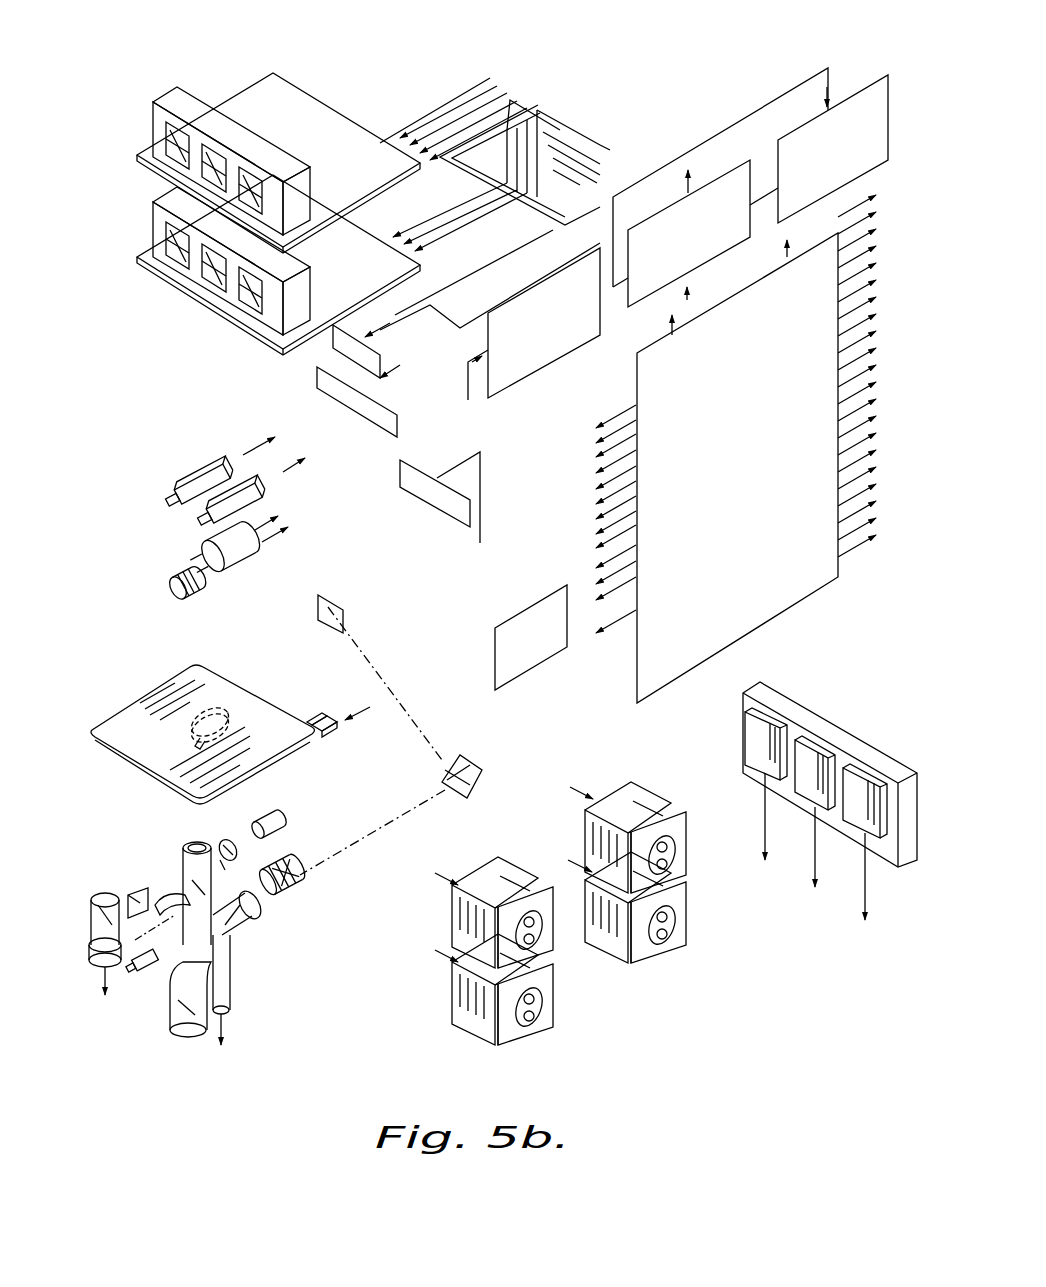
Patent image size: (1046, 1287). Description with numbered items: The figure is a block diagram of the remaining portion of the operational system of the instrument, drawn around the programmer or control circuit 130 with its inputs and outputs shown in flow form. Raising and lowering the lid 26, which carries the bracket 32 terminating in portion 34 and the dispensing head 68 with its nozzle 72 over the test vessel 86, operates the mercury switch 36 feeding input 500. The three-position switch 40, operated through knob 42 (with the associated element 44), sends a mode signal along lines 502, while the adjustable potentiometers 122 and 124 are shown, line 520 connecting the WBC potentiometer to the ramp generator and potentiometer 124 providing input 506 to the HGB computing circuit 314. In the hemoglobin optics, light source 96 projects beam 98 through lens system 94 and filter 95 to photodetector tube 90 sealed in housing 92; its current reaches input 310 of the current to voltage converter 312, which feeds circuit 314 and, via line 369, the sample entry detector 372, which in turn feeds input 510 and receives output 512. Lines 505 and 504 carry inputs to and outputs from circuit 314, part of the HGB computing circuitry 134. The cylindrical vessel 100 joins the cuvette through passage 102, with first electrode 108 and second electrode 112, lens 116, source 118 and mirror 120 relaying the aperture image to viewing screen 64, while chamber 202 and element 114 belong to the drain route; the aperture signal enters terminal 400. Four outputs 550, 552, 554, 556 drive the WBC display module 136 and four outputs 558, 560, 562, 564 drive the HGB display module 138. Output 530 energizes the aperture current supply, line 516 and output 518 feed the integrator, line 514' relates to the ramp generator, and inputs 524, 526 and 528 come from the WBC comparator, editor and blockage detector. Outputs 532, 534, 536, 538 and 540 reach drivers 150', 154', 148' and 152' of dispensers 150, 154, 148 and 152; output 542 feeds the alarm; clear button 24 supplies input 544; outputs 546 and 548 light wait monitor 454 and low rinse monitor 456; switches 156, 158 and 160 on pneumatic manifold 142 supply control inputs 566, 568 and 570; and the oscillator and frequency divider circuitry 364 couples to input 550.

The display module 136 is at (187, 102).
The display module 138 is at (230, 287).
The output 550 is at (470, 100).
The output 552 is at (505, 95).
The output 554 is at (515, 100).
The output 556 is at (528, 104).
The output 546 is at (598, 158).
The output 548 is at (600, 160).
The output 558 is at (425, 236).
The output 560 is at (440, 230).
The output 562 is at (425, 248).
The output 564 is at (478, 214).
The current to voltage converter 312 is at (500, 380).
The input 310 is at (468, 380).
The push button operated switch 24 is at (398, 473).
The input 544 is at (478, 532).
The wait signal monitor 454 is at (327, 340).
The low rinse liquid monitor 456 is at (320, 373).
The line 369 is at (742, 120).
The HGB computing circuit 134 is at (722, 67).
The sample entry detector circuit 372 is at (880, 77).
The HGB computing circuit 314 is at (710, 247).
The input 506 is at (712, 170).
The input 510 is at (785, 258).
The line 504 is at (670, 322).
The line 505 is at (688, 310).
The control circuit 130 is at (753, 612).
The output 512 is at (847, 195).
The output 542 is at (870, 212).
The output 540 is at (870, 229).
The output 538 is at (845, 265).
The output 534 is at (870, 266).
The output 536 is at (845, 298).
The output 532 is at (870, 300).
The output 518 is at (845, 333).
The line 516 is at (870, 334).
The output 530 is at (845, 366).
The conductor 514' is at (882, 363).
The lines 502 is at (640, 422).
The control input 566 is at (640, 452).
The input 500 is at (598, 472).
The control input 568 is at (600, 502).
The control input 570 is at (647, 508).
The input 528 is at (605, 530).
The input 526 is at (647, 540).
The input 524 is at (625, 565).
The oscillator and frequency divider circuitry 364 is at (540, 672).
The pneumatic manifold 142 is at (778, 695).
The switch 156 is at (752, 745).
The switch 158 is at (800, 785).
The switch 160 is at (853, 815).
The dispenser 150 is at (500, 893).
The driver 150' is at (420, 869).
The dispenser 148 is at (480, 995).
The fill dispenser driver 148' is at (417, 949).
The dispenser 152 is at (636, 816).
The driver 152' is at (572, 767).
The dispenser 154 is at (635, 926).
The driver 154' is at (559, 845).
The mirror 120 is at (480, 790).
The lid 26 is at (110, 722).
The nozzle 72 is at (228, 735).
The dispensing head 68 is at (235, 710).
The bracket 32 is at (310, 722).
The portion 34 is at (327, 718).
The mercury switch 36 is at (330, 733).
The viewing screen 64 is at (330, 600).
The motor 44 is at (215, 570).
The knob 42 is at (178, 590).
The three-position switch 40 is at (165, 555).
The adjustable potentiometer 122 is at (200, 477).
The adjustable potentiometer 124 is at (258, 496).
The line 520 is at (243, 455).
The test vessel 86 is at (183, 870).
The chamber 202 is at (213, 1035).
The cylindrical vessel 100 is at (228, 928).
The second electrode 112 is at (231, 968).
The outlet 114 is at (232, 1005).
The input terminal 400 is at (250, 985).
The lens 116 is at (305, 882).
The lens system 94 is at (228, 840).
The light source 96 is at (280, 822).
The photodetector tube 90 is at (92, 925).
The cylindrical housing 92 is at (92, 955).
The filter 95 is at (125, 900).
The beam 98 is at (175, 890).
The first electrode 108 is at (158, 965).
The source 118 is at (135, 965).
The through passage 102 is at (212, 870).